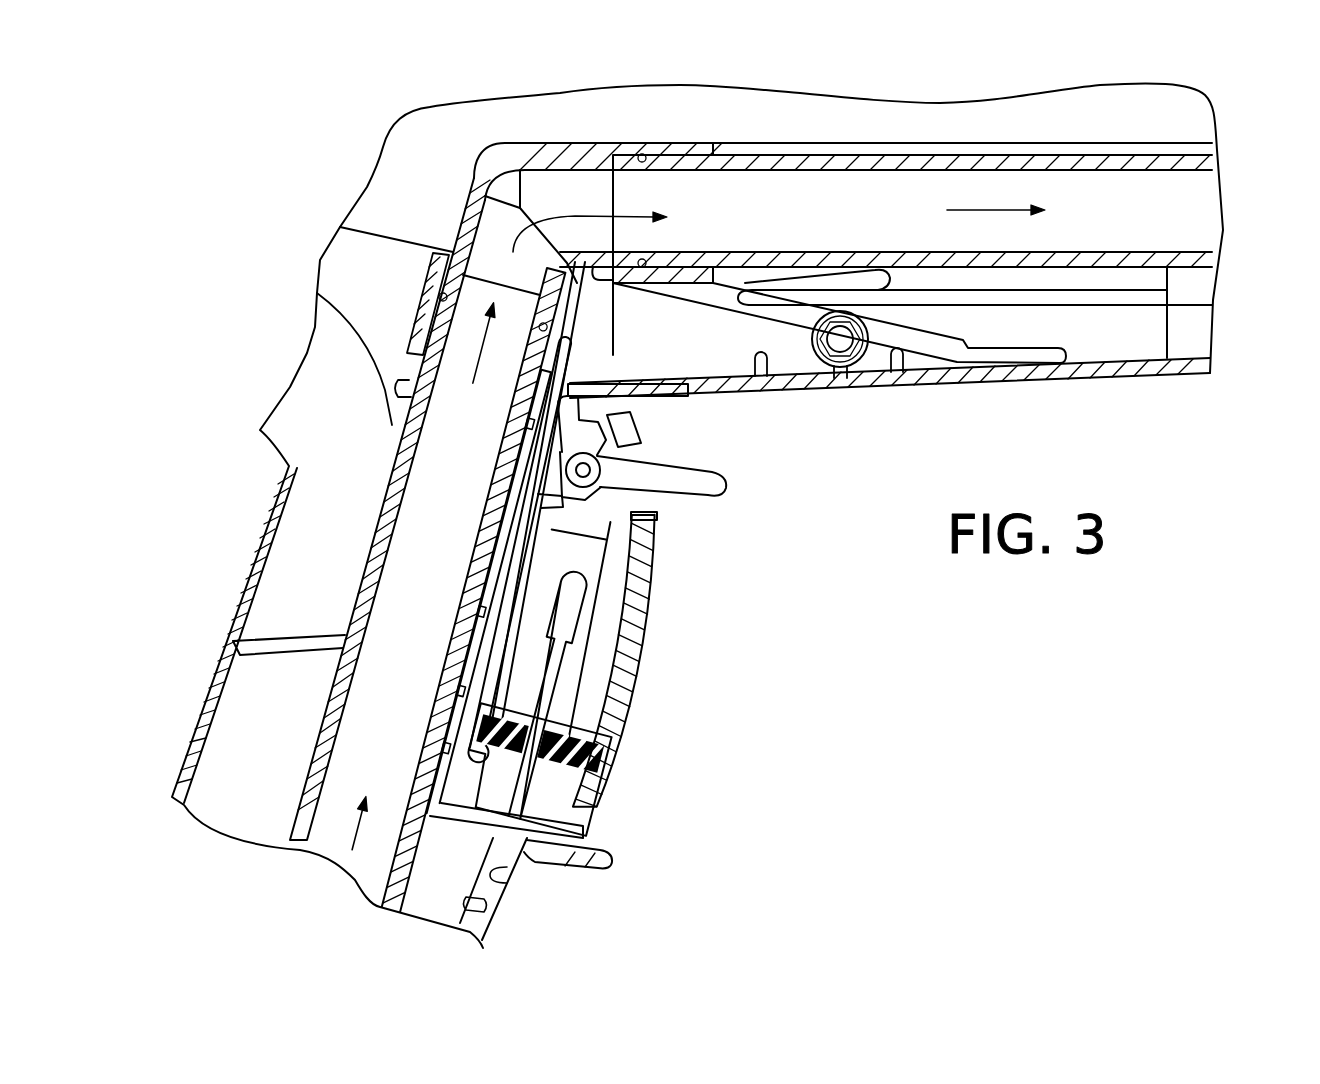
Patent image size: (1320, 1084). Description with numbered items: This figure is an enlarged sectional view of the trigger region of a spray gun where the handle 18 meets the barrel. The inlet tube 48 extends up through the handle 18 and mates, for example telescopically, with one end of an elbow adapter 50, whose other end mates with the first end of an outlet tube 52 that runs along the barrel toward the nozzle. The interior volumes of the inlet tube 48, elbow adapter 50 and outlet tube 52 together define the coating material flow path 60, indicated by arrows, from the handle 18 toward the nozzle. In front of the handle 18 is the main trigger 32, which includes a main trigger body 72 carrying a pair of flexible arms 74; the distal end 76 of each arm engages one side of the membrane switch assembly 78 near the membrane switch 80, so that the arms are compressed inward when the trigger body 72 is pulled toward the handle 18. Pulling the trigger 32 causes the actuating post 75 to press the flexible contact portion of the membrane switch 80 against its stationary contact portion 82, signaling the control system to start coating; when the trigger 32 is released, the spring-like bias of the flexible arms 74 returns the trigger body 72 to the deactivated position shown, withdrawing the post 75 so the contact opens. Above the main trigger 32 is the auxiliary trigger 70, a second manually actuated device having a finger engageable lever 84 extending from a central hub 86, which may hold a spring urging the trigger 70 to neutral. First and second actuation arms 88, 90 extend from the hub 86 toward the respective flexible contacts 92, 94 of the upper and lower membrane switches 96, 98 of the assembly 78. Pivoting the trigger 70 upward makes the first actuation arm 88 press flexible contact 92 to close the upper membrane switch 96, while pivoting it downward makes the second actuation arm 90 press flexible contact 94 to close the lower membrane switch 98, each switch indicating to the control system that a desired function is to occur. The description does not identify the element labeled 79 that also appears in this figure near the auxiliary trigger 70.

The handle 18 is at (230, 627).
The main trigger 32 is at (638, 718).
The inlet tube 48 is at (313, 763).
The elbow adapter 50 is at (490, 150).
The outlet tube 52 is at (1185, 258).
The coating material flow path 60 is at (347, 840).
The auxiliary trigger 70 is at (752, 517).
The main trigger body 72 is at (603, 650).
The flexible arms 74 is at (512, 670).
The actuating post 75 is at (597, 770).
The distal end 76 is at (457, 742).
The membrane switch assembly 78 is at (418, 747).
The pawl 79 is at (635, 447).
The membrane switch 80 is at (473, 703).
The stationary contact portion 82 is at (481, 742).
The finger engageable lever 84 is at (713, 473).
The central hub 86 is at (600, 484).
The first actuation arm 88 is at (575, 410).
The second actuation arm 90 is at (637, 519).
The flexible contact 92 is at (585, 355).
The flexible contact 94 is at (533, 526).
The upper membrane switch 96 is at (512, 405).
The lower membrane switch 98 is at (499, 499).